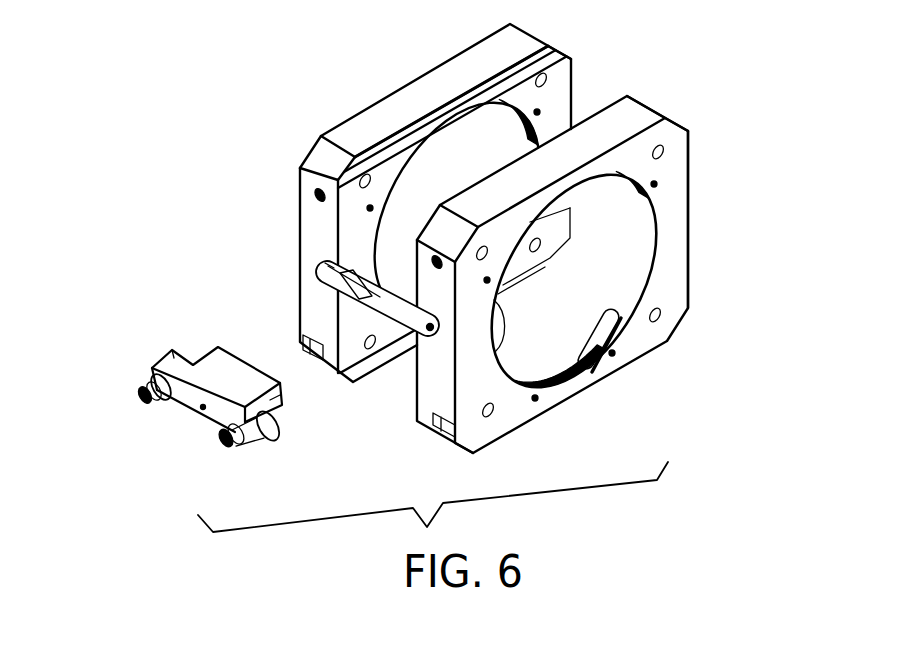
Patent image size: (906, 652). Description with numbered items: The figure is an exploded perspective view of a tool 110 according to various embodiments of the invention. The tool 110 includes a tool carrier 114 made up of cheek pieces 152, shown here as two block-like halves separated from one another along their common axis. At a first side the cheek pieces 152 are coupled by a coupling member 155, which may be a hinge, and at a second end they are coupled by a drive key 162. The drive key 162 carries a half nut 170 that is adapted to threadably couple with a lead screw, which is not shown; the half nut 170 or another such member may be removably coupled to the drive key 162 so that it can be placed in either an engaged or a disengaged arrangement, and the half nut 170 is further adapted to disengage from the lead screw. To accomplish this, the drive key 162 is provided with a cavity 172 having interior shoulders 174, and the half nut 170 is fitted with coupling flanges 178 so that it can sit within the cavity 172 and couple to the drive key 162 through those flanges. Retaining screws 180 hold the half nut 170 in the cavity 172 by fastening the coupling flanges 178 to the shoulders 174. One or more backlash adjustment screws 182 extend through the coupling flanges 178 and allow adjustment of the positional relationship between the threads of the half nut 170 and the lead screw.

The tool 110 is at (176, 67).
The tool carrier 114 is at (667, 337).
The cheek pieces 152 is at (363, 117).
The coupling member 155 is at (678, 217).
The drive key 162 is at (480, 343).
The half nut 170 is at (184, 424).
The cavity 172 is at (300, 298).
The interior shoulders 174 is at (327, 268).
The coupling flanges 178 is at (172, 351).
The retaining screws 180 is at (148, 400).
The backlash adjustment screws 182 is at (155, 371).